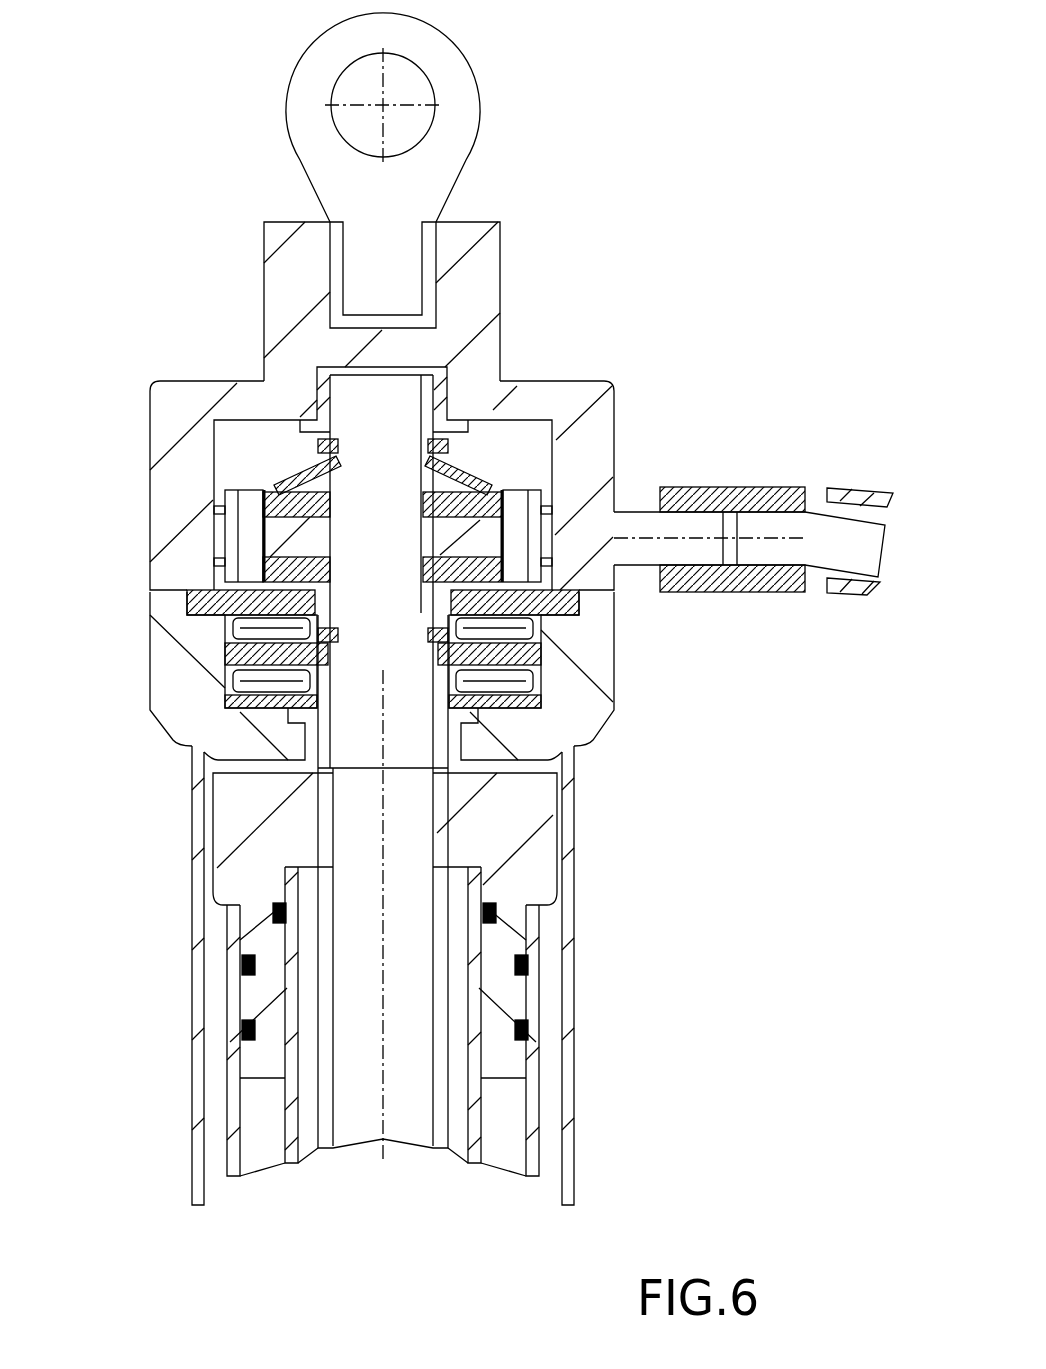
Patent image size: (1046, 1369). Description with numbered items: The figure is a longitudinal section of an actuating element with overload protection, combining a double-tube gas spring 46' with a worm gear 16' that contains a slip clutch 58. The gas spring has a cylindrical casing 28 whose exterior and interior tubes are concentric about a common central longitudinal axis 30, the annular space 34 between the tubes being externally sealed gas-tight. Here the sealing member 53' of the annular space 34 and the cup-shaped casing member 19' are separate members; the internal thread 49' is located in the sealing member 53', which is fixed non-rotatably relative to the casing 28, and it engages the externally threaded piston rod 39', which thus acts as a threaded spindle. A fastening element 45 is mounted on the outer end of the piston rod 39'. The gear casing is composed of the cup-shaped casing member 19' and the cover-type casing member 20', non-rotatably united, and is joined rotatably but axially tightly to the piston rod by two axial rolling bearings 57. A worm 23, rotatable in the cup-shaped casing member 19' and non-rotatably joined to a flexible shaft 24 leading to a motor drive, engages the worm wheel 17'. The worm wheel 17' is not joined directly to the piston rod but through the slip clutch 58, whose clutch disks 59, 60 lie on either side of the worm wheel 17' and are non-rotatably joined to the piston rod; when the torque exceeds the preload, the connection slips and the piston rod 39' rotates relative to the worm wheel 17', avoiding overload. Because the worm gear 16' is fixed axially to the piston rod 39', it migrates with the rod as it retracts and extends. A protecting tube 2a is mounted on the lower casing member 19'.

The fastening element 45 is at (457, 77).
The slip clutch 58 is at (250, 478).
The clutch disk 59 is at (280, 505).
The worm wheel 17' is at (180, 536).
The clutch disk 60 is at (285, 569).
The axial rolling bearings 57 is at (233, 680).
The cover-type casing member 20' is at (440, 406).
The worm gear 16' is at (442, 495).
The flexible shaft 24 is at (815, 530).
The worm 23 is at (547, 550).
The cup-shaped casing member 19' is at (428, 680).
The internal thread 49' is at (211, 848).
The sealing member 53' is at (567, 848).
The central longitudinal axis 30 is at (385, 927).
The piston rod 39' is at (313, 1021).
The double-tube gas spring 46' is at (397, 975).
The cylindrical casing 28 is at (225, 1057).
The protecting tube 2a is at (200, 1133).
The annular space 34 is at (515, 1131).